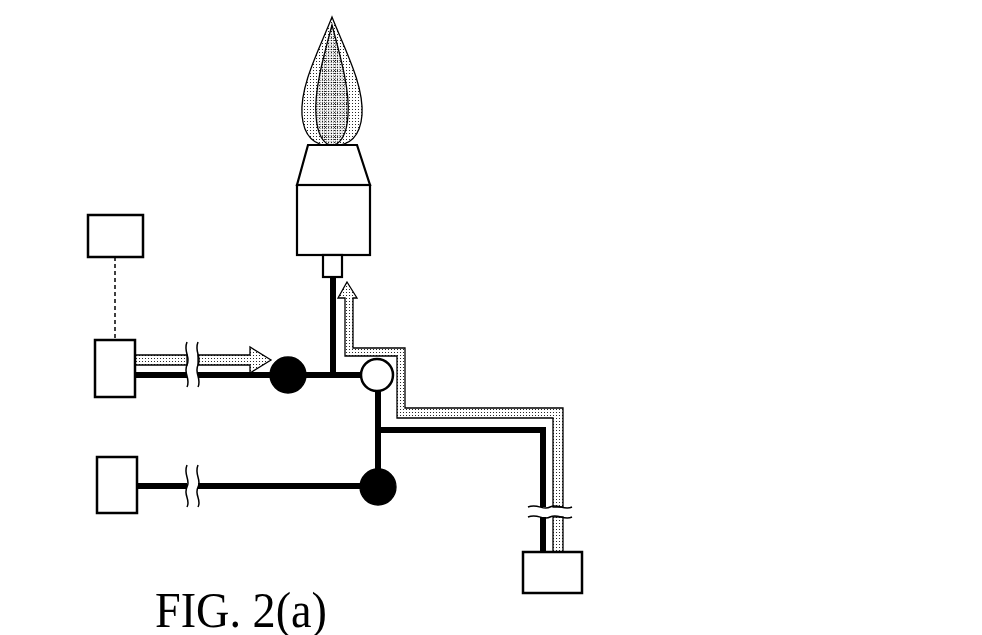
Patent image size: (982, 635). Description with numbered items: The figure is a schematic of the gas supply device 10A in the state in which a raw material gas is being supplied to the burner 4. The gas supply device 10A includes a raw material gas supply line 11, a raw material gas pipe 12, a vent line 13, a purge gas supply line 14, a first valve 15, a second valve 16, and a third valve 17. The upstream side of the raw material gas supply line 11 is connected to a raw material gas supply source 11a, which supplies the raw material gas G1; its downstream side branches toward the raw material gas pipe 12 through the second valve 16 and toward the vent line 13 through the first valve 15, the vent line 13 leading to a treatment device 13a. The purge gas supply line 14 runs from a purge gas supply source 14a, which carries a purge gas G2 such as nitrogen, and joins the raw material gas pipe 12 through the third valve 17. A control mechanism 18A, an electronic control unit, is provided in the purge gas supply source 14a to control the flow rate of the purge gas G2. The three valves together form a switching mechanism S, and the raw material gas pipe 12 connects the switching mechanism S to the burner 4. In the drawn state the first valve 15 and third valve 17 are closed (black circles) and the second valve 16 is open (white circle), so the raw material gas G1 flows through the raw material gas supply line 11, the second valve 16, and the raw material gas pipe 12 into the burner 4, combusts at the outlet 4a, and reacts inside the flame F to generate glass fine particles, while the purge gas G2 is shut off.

The flame F is at (348, 67).
The outlet 4a is at (335, 135).
The burner 4 is at (357, 222).
The control mechanism 18A is at (113, 213).
The purge gas supply source 14a is at (95, 368).
The purge gas G2 is at (232, 355).
The purge gas supply line 14 is at (245, 380).
The third valve 17 is at (288, 393).
The raw material gas pipe 12 is at (337, 325).
The second valve 16 is at (394, 364).
The gas supply device 10A is at (353, 377).
The switching mechanism S is at (400, 438).
The raw material gas supply line 11 is at (502, 433).
The raw material gas G1 is at (565, 433).
The raw material gas supply source 11a is at (583, 573).
The vent line 13 is at (288, 492).
The treatment device 13a is at (118, 513).
The first valve 15 is at (369, 500).